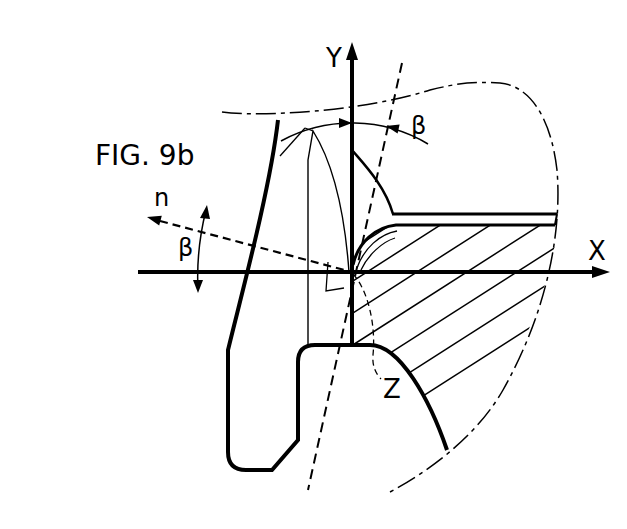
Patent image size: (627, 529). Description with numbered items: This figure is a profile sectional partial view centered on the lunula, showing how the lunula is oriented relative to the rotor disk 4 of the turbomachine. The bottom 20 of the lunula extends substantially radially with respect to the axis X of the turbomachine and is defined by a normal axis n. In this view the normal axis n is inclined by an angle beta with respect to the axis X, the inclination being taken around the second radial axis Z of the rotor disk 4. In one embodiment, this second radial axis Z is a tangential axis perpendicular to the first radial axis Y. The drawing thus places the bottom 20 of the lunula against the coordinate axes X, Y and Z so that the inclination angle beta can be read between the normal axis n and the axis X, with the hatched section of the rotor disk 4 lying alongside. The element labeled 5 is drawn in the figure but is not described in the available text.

The rotor disk 4 is at (476, 340).
The tool (grinding worm / gear) tooth 5 is at (476, 179).
The bottom of the lunula 20 is at (320, 406).